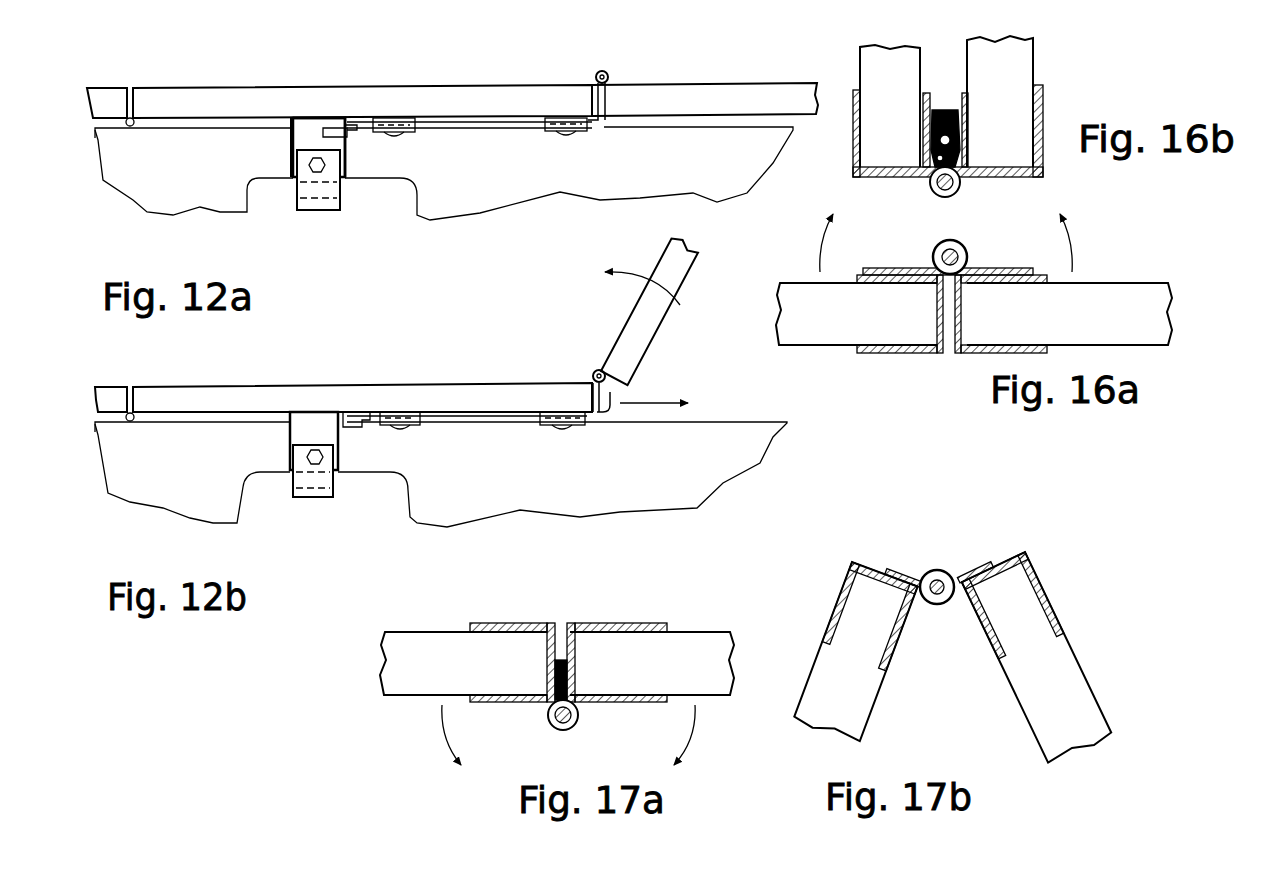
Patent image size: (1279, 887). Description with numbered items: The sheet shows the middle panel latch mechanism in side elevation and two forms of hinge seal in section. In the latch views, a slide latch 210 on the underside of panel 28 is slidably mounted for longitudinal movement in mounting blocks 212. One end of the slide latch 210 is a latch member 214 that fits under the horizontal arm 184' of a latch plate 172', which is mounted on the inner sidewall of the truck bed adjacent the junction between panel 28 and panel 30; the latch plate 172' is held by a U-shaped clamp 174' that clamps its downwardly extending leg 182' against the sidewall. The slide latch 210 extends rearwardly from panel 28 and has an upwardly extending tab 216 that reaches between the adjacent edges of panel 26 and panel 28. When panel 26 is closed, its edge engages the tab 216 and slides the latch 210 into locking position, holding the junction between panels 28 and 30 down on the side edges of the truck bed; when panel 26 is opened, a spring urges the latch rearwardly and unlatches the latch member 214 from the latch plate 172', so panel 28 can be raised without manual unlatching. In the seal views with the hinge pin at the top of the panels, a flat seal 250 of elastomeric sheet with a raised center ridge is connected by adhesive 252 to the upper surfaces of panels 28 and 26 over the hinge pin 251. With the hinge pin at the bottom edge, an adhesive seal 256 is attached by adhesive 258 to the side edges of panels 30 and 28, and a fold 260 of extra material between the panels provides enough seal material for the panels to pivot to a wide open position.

In FIG. 12A, the rear panel 26 is at (733, 92).
In FIG. 12B, the rear panel 26 is at (667, 263).
In FIG. 16B, the rear panel 26 is at (1020, 67).
In FIG. 16A, the rear panel 26 is at (1148, 321).
In FIG. 12A, the panel 28 is at (483, 100).
In FIG. 12B, the panel 28 is at (441, 387).
In FIG. 16B, the panel 28 is at (897, 63).
In FIG. 16A, the panel 28 is at (817, 321).
In FIG. 17A, the panel 28 is at (698, 681).
In FIG. 17B, the panel 28 is at (1060, 696).
In FIG. 17A, the panel 30 is at (460, 672).
In FIG. 17B, the panel 30 is at (853, 696).
In FIG. 12A, the latch plate 172' is at (288, 193).
In FIG. 12B, the latch plate 172' is at (291, 488).
In FIG. 12A, the U-shaped clamp 174' is at (327, 214).
In FIG. 12A, the downwardly extending leg 182' is at (242, 147).
In FIG. 12A, the horizontal leg 184' is at (357, 107).
In FIG. 12A, the slide latch 210 is at (500, 124).
In FIG. 12B, the slide latch 210 is at (502, 418).
In FIG. 12A, the mounting blocks 212 is at (414, 132).
In FIG. 12B, the mounting blocks 212 is at (422, 427).
In FIG. 12A, the latch member 214 is at (347, 150).
In FIG. 12B, the latch member 214 is at (360, 430).
In FIG. 12A, the upwardly extending tab 216 is at (607, 102).
In FIG. 12B, the upwardly extending tab 216 is at (617, 410).
In FIG. 16B, the flat seal 250 is at (945, 118).
In FIG. 16A, the flat seal 250 is at (893, 266).
In FIG. 16A, the hinge pin 251 is at (958, 243).
In FIG. 16A, the adhesive 252 is at (913, 284).
In FIG. 17B, the adhesive seal 256 is at (983, 563).
In FIG. 17B, the adhesive 258 is at (880, 584).
In FIG. 17A, the fold 260 is at (575, 675).
In FIG. 17B, the fold 260 is at (925, 572).